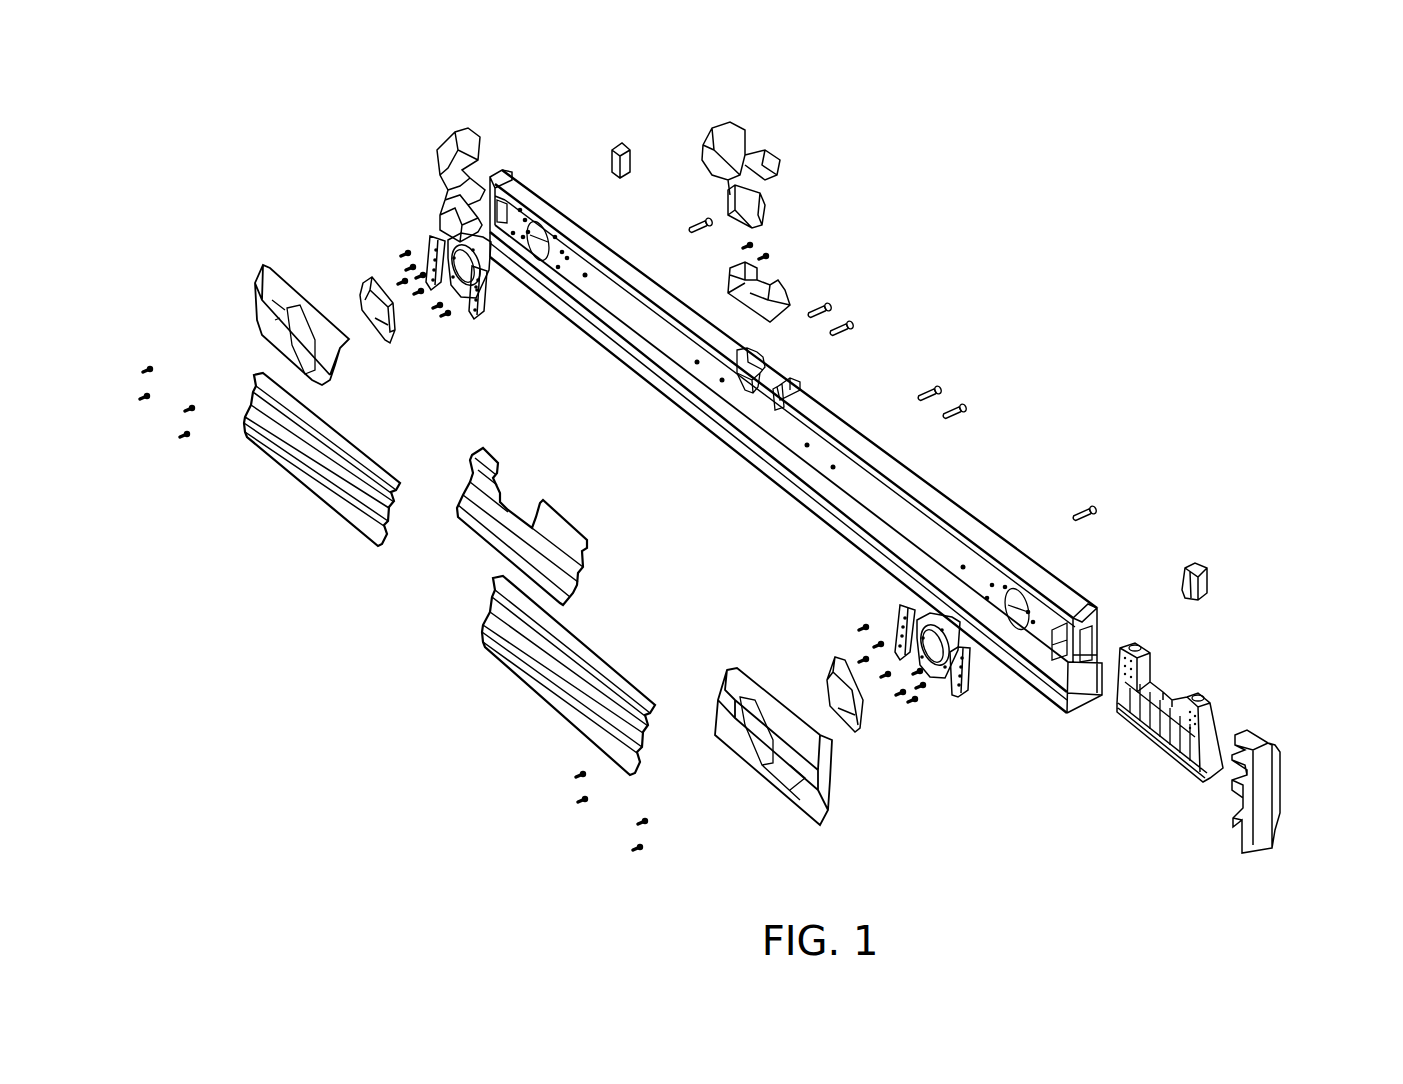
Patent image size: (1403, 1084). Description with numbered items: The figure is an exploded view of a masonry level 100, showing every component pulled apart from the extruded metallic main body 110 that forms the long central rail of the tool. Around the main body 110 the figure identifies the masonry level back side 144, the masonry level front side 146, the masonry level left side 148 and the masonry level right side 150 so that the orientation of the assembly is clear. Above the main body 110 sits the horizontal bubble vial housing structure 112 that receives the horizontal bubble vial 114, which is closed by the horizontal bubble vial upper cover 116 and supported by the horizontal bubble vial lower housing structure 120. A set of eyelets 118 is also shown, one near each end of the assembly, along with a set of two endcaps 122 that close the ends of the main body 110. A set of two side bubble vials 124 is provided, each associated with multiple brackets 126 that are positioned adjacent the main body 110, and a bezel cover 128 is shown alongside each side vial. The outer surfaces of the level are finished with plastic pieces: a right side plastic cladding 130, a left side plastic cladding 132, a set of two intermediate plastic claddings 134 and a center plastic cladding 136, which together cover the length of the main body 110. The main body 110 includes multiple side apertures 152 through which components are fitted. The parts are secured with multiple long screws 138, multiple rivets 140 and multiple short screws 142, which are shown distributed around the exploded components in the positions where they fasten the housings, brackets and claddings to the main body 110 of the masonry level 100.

The masonry level 100 is at (1103, 130).
The extruded metallic main body 110 is at (1057, 752).
The horizontal bubble vial housing structure 112 is at (795, 280).
The horizontal bubble vial 114 is at (775, 208).
The horizontal bubble vial upper cover 116 is at (742, 124).
The set of eyelets 118 is at (635, 140).
The horizontal bubble vial lower housing structure 120 is at (1215, 688).
The set of two endcaps 122 is at (465, 118).
The set of two side bubble vials 124 is at (464, 300).
The brackets 126 is at (428, 229).
The bezel cover 128 is at (393, 340).
The right side plastic cladding 130 is at (822, 822).
The left side plastic cladding 132 is at (258, 335).
The set of two intermediate plastic claddings 134 is at (356, 440).
The center plastic cladding 136 is at (566, 517).
The long screws 138 is at (968, 406).
The rivets 140 is at (858, 627).
The short screws 142 is at (642, 850).
The masonry level back side 144 is at (1110, 286).
The masonry level front side 146 is at (324, 670).
The masonry level left side 148 is at (352, 104).
The masonry level right side 150 is at (1266, 897).
The side apertures 152 is at (503, 198).